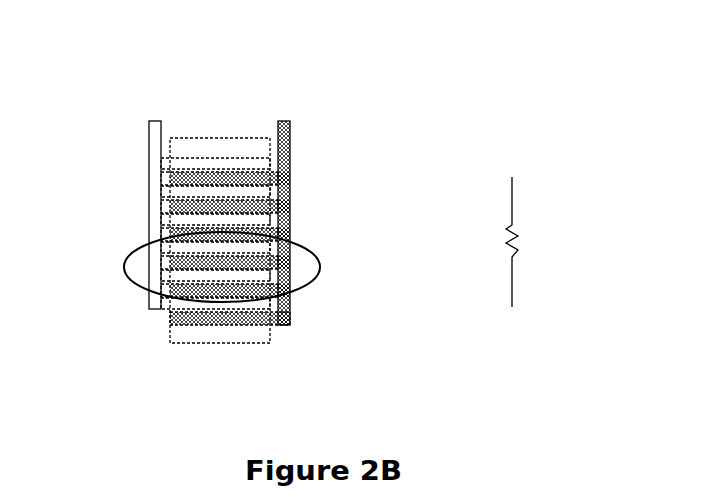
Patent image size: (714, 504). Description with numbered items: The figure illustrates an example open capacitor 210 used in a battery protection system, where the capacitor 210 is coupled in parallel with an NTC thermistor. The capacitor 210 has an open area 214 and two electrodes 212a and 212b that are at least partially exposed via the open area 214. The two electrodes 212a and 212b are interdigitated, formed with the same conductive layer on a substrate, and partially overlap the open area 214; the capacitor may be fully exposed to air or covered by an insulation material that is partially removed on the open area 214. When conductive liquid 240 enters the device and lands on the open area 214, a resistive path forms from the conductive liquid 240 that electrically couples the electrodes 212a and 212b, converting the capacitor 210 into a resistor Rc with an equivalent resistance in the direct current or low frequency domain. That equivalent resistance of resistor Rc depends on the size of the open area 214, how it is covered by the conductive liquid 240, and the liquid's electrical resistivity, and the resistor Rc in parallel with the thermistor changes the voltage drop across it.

The capacitor 210 is at (458, 70).
The electrode 212a is at (290, 156).
The electrode 212b is at (149, 241).
The open area 214 is at (233, 343).
The conductive liquid 240 is at (307, 285).
The resistor Rc is at (525, 242).